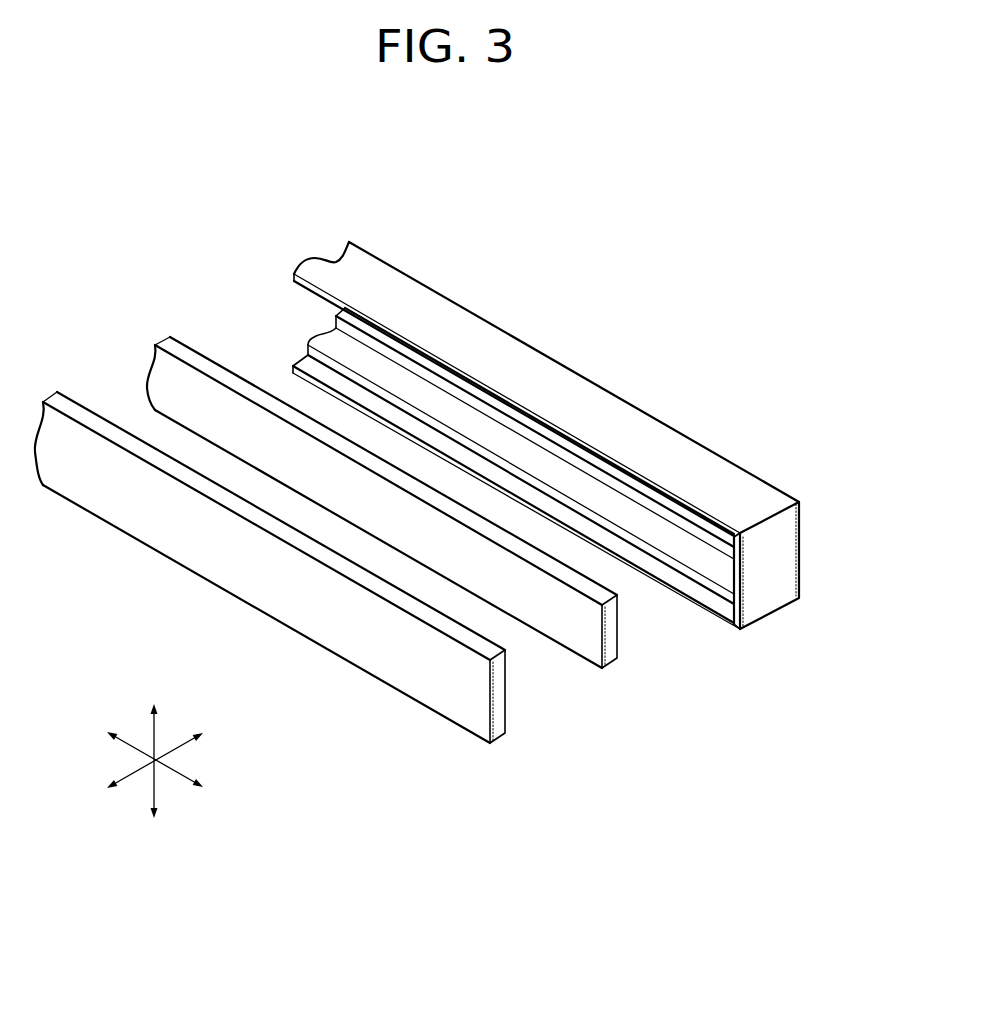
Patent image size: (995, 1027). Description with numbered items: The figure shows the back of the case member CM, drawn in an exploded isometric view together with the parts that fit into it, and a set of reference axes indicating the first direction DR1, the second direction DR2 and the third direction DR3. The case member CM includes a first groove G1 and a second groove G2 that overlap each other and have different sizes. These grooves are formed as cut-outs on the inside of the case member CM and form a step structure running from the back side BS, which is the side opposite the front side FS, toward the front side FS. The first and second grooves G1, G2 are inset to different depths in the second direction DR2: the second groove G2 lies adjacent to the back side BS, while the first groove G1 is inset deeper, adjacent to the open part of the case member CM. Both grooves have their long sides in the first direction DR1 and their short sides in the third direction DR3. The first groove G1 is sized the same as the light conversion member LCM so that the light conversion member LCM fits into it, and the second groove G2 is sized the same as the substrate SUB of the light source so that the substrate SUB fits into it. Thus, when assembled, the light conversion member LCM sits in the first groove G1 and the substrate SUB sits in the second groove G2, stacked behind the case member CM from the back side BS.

The substrate SUB is at (498, 727).
The light conversion member LCM is at (610, 657).
The case member CM is at (512, 352).
The back side BS is at (733, 625).
The front side FS is at (806, 540).
The first groove G1 is at (722, 552).
The second groove G2 is at (725, 602).
The first direction DR1 is at (173, 770).
The second direction DR2 is at (173, 749).
The third direction DR3 is at (154, 747).